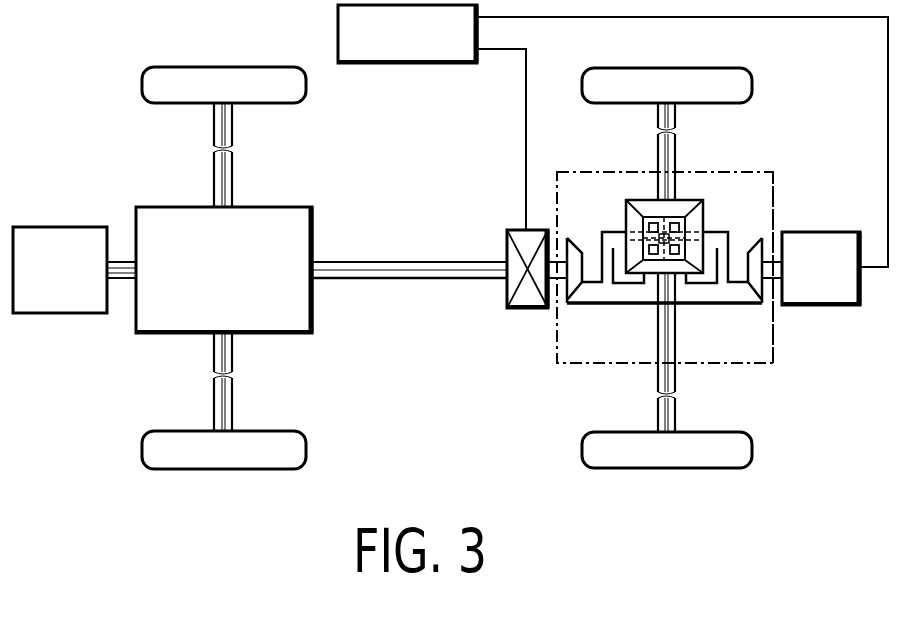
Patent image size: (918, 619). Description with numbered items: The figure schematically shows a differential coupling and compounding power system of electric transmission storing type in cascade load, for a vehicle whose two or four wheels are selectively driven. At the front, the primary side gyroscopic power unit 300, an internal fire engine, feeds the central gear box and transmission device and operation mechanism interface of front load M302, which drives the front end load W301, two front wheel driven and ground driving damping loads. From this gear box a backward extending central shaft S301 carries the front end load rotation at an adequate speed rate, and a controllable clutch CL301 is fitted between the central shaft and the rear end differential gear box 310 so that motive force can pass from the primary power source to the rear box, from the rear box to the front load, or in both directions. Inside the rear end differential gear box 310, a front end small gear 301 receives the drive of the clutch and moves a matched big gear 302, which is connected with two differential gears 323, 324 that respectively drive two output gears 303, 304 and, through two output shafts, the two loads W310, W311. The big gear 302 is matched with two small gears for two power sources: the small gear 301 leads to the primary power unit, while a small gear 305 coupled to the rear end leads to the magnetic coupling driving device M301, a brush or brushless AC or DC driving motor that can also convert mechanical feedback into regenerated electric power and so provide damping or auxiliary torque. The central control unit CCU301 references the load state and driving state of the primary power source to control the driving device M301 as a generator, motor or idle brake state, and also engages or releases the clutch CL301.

The primary side gyroscopic power unit 300 is at (74, 270).
The central gear box and transmission device and operation mechanism interface of fr M302 is at (263, 317).
The magnetic coupling driving device M301 is at (817, 290).
The central control unit CCU301 is at (613, 136).
The central shaft S301 is at (364, 268).
The controllable clutch CL301 is at (507, 251).
The front end load W301 is at (217, 80).
The load W310 is at (730, 80).
The load W311 is at (740, 447).
The small gear 301 is at (583, 245).
The big gear 302 is at (590, 294).
The output gear 303 is at (690, 215).
The output gear 304 is at (678, 272).
The small gear 305 is at (773, 194).
The rear end differential gear box 310 is at (640, 366).
The differential gear 323 is at (648, 218).
The differential gear 324 is at (750, 238).